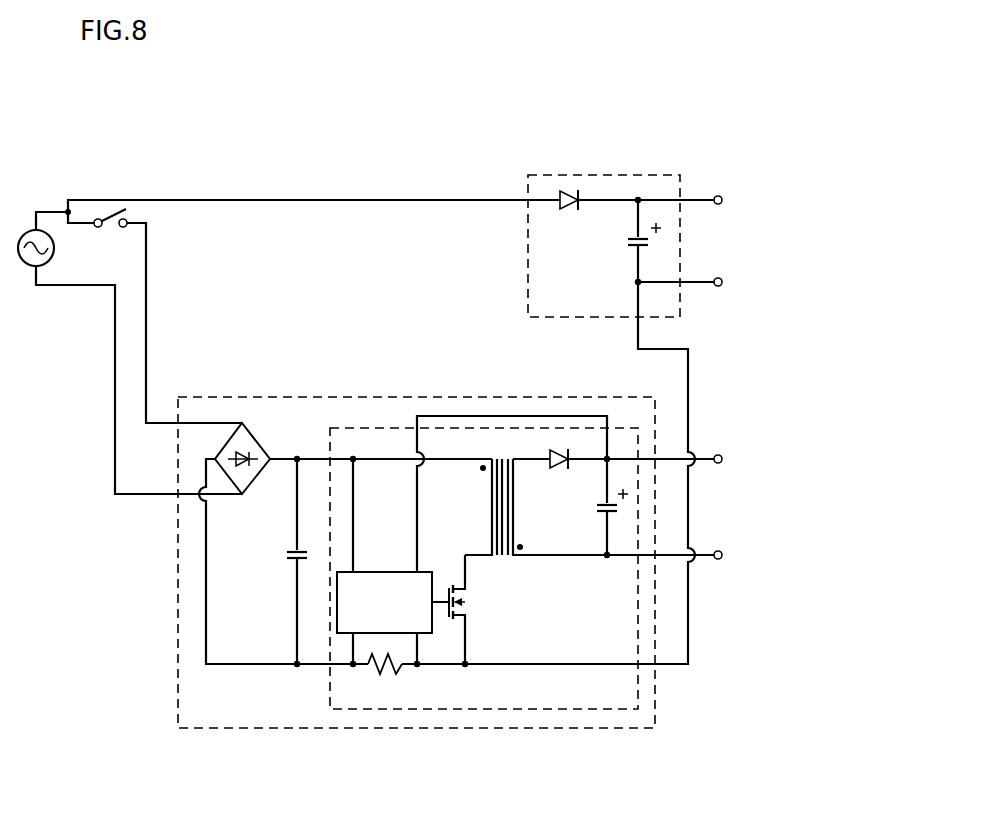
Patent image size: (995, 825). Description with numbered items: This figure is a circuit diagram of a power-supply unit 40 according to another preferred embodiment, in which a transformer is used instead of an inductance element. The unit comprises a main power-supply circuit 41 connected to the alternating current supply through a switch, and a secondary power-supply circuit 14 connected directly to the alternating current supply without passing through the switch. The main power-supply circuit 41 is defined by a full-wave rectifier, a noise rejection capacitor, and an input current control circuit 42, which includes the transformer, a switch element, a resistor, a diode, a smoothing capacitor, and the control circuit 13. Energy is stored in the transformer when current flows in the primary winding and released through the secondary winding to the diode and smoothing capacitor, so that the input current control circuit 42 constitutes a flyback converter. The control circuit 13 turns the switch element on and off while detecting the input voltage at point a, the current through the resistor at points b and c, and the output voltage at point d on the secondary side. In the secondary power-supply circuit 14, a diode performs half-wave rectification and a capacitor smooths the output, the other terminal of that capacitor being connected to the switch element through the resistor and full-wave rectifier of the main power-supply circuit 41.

The power-supply unit 40 is at (200, 145).
The secondary power-supply circuit 14 is at (568, 166).
The main power-supply circuit 41 is at (213, 388).
The input current control circuit 42 is at (363, 420).
The control circuit 13 is at (398, 572).